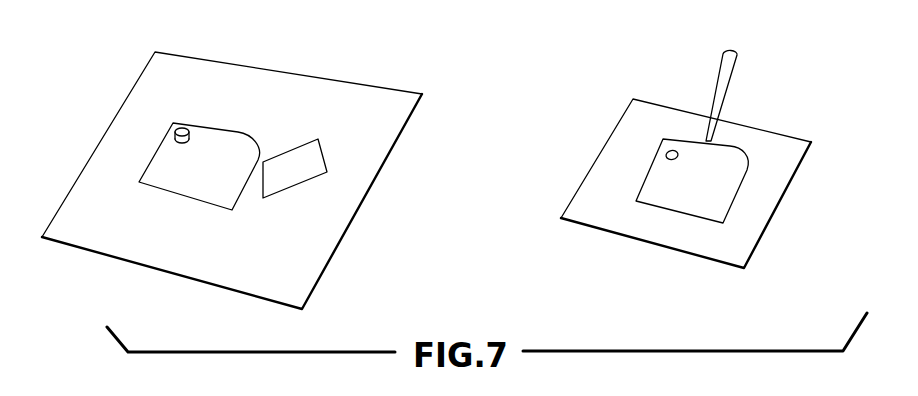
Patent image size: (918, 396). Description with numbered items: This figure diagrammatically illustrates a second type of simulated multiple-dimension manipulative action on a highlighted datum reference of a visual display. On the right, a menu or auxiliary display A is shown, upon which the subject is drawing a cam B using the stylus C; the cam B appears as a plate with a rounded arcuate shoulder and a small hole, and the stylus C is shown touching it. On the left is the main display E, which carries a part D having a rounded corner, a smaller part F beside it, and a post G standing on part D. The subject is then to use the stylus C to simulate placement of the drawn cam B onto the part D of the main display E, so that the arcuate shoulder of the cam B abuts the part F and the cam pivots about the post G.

The menu or auxiliary display A is at (730, 242).
The cam B is at (722, 195).
The stylus C is at (725, 80).
The part D is at (223, 148).
The main display E is at (313, 245).
The part F is at (313, 160).
The post G is at (184, 127).